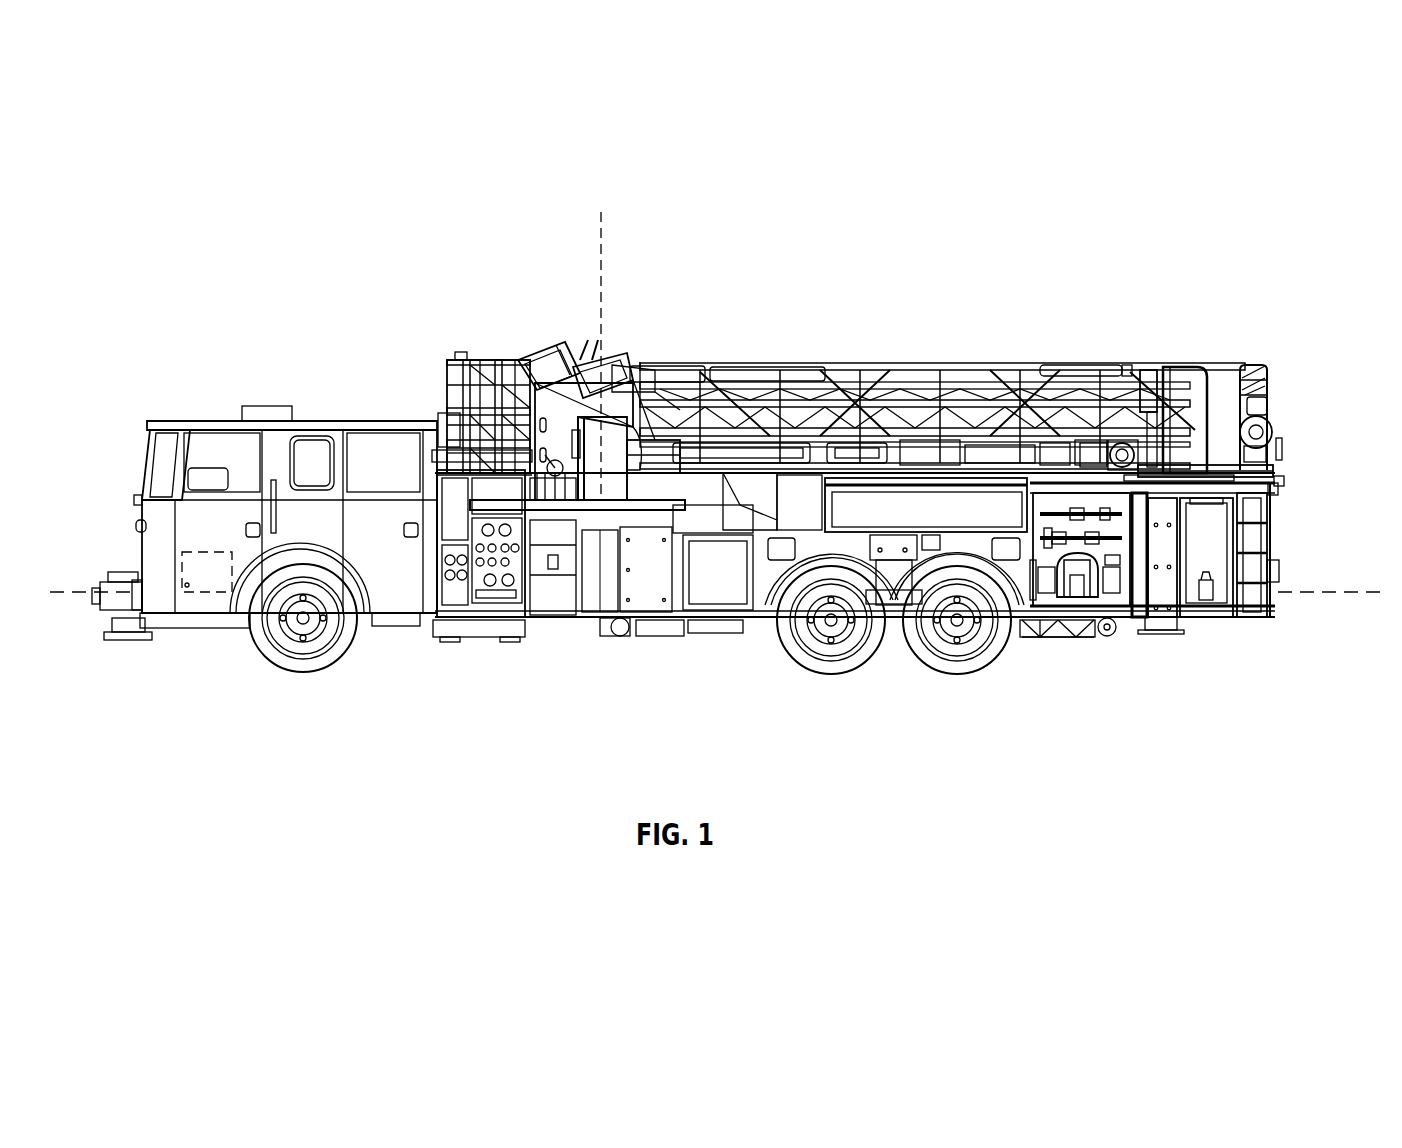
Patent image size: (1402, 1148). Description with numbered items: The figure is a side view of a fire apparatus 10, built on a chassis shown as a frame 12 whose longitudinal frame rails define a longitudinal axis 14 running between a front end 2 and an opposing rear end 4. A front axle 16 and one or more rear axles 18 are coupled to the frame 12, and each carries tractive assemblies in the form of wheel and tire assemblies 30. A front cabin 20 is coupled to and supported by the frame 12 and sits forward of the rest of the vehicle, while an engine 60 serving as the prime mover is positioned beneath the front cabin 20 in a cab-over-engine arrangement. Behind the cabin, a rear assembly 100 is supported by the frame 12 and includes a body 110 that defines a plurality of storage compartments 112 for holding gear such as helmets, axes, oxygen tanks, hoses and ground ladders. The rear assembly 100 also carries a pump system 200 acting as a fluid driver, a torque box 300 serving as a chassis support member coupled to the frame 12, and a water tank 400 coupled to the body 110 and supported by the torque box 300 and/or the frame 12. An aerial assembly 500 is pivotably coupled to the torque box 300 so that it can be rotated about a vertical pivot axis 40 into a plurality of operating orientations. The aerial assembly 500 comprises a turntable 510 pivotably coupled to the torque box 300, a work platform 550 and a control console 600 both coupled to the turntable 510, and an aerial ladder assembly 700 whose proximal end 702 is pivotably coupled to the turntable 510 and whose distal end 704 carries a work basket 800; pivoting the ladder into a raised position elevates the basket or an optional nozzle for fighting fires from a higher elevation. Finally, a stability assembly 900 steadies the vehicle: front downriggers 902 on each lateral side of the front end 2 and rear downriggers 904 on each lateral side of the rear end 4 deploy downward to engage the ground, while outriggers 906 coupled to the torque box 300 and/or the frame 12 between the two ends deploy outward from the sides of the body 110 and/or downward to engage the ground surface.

The fire apparatus 10 is at (90, 180).
The front end 2 is at (251, 531).
The rear end 4 is at (1288, 477).
The frame 12 is at (1027, 633).
The longitudinal axis 14 is at (1308, 592).
The front axle 16 is at (297, 675).
The rear axles 18 is at (894, 657).
The front cabin 20 is at (236, 405).
The wheel and tire assemblies 30 is at (636, 657).
The vertical pivot axis 40 is at (603, 232).
The engine 60 is at (205, 583).
The rear assembly 100 is at (803, 370).
The body 110 is at (648, 573).
The storage compartments 112 is at (1157, 483).
The pump system 200 is at (478, 640).
The torque box 300 is at (957, 635).
The water tank 400 is at (829, 628).
The aerial assembly 500 is at (507, 372).
The turntable 510 is at (616, 362).
The work platform 550 is at (450, 420).
The control console 600 is at (528, 345).
The aerial ladder assembly 700 is at (760, 355).
The proximal end 702 is at (441, 360).
The distal end 704 is at (1135, 305).
The work basket 800 is at (1280, 368).
The stability assembly 900 is at (645, 655).
The front downriggers 902 is at (118, 652).
The rear downriggers 904 is at (1147, 640).
The outriggers 906 is at (662, 648).